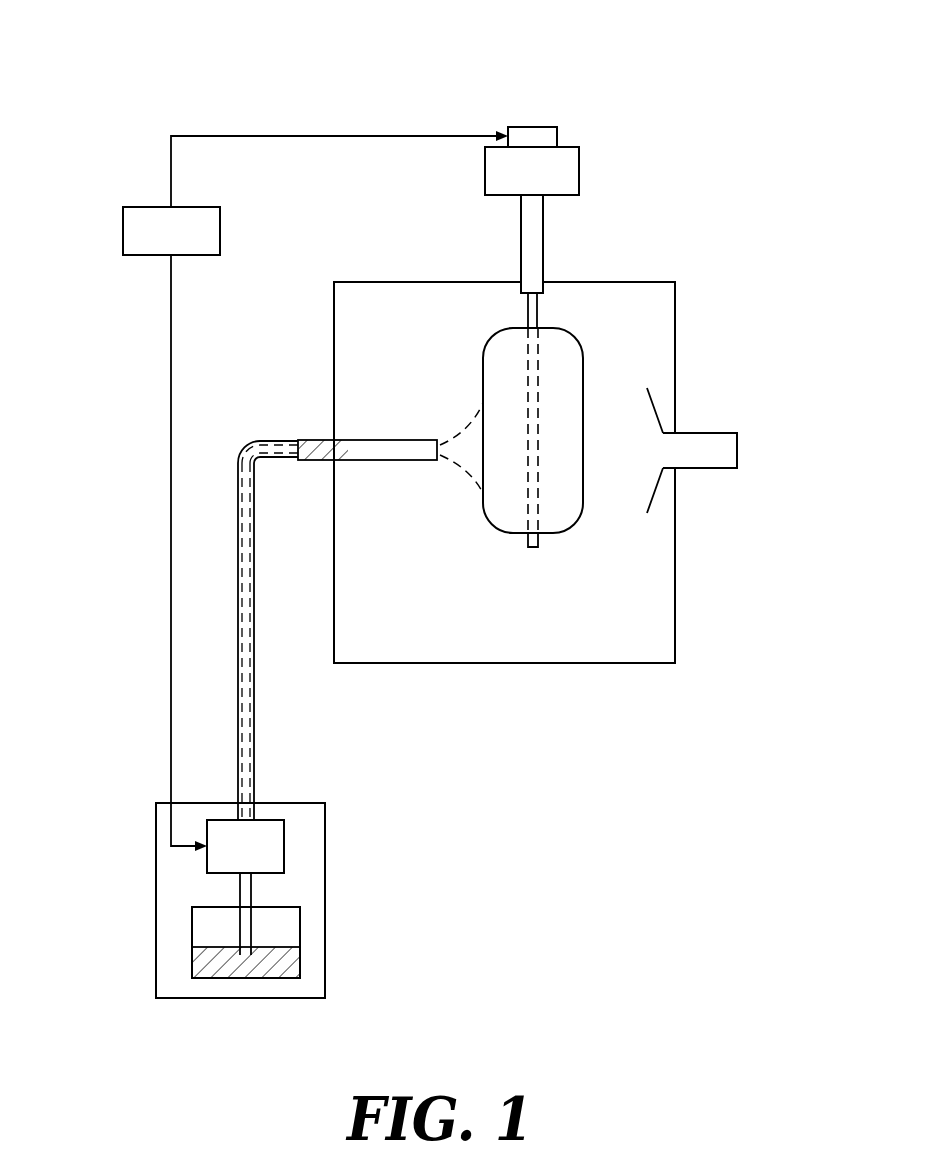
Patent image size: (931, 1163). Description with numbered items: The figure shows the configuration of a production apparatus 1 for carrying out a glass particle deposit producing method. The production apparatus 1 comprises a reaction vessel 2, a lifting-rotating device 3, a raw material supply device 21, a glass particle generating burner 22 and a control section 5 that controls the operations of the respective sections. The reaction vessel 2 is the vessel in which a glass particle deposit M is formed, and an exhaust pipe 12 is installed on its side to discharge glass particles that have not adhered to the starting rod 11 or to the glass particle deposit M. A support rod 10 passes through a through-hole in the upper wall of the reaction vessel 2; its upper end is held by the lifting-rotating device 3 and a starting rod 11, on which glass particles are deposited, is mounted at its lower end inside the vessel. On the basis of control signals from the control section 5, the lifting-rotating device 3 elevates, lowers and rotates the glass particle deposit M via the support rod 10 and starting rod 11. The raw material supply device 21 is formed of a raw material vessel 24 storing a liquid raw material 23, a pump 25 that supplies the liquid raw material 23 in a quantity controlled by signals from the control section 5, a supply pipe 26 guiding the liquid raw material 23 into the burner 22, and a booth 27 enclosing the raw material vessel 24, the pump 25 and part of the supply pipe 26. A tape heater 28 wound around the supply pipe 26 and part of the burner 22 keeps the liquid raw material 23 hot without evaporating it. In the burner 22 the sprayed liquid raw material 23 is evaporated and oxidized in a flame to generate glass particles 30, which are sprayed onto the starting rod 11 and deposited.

The production apparatus 1 is at (578, 88).
The reaction vessel 2 is at (675, 330).
The lifting-rotating device 3 is at (579, 168).
The control section 5 is at (123, 230).
The support rod 10 is at (543, 238).
The starting rod 11 is at (537, 312).
The exhaust pipe 12 is at (718, 433).
The raw material supply device 21 is at (344, 792).
The glass particle generating burner 22 is at (378, 440).
The liquid raw material 23 is at (300, 965).
The raw material vessel 24 is at (300, 925).
The pump 25 is at (284, 840).
The supply pipe 26 is at (250, 735).
The booth 27 is at (325, 877).
The tape heater 28 is at (265, 440).
The glass particles 30 is at (470, 475).
The glass particle deposit M is at (483, 372).